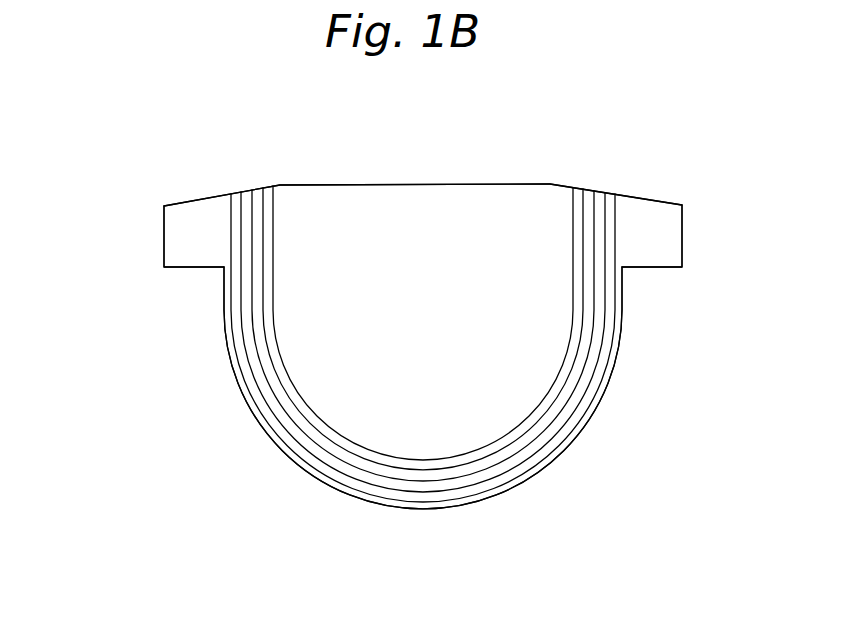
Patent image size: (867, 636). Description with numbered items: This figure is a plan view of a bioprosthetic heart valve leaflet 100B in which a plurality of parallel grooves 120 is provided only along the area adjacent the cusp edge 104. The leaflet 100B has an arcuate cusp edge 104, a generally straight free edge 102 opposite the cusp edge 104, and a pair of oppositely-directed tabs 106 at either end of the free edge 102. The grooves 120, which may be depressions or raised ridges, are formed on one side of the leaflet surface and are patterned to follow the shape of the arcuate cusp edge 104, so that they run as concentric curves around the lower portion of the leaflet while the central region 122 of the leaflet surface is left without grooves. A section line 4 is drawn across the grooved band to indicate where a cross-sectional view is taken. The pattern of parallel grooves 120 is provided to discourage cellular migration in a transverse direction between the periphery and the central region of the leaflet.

The bioprosthetic heart valve leaflet 100B is at (188, 154).
The free edge 102 is at (527, 183).
The cusp edge 104 is at (512, 487).
The tabs 106 is at (683, 230).
The parallel grooves 120 is at (578, 373).
The central body region 122 is at (325, 217).
The section line for FIG. 4 is at (333, 385).